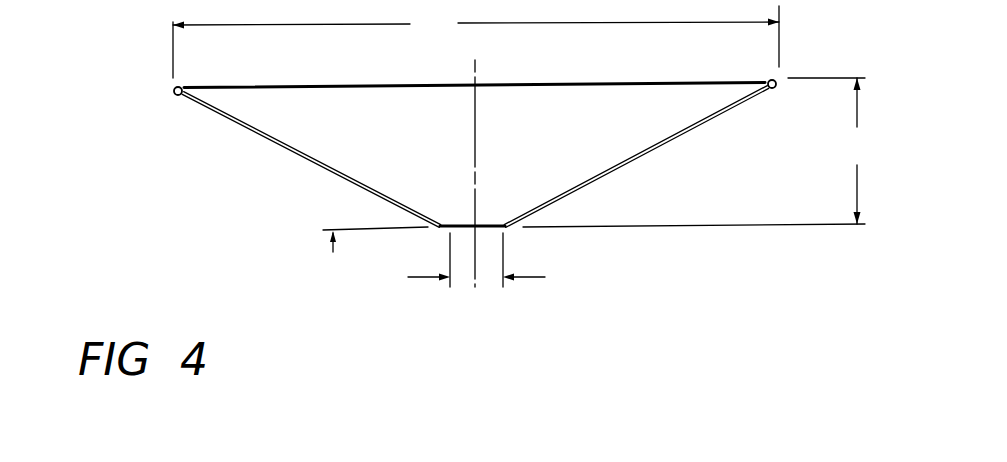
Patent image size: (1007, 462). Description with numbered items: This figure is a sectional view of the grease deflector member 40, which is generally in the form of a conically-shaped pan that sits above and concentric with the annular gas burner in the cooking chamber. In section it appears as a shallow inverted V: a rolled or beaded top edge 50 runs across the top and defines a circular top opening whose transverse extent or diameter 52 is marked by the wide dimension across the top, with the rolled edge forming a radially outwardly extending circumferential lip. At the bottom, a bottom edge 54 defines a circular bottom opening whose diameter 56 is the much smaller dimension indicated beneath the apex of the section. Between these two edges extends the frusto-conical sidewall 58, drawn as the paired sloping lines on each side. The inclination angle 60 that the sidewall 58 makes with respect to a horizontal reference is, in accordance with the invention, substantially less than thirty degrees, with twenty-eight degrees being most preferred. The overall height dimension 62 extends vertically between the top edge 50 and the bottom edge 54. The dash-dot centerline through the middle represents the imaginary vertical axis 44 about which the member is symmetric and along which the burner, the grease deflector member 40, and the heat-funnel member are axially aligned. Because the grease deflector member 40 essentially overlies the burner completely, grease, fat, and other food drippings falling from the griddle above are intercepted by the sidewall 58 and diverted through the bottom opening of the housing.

The grease deflector member 40 is at (413, 193).
The imaginary vertical axis 44 is at (473, 102).
The top edge 50 is at (172, 89).
The diameter 52 is at (476, 40).
The bottom edge 54 is at (468, 233).
The diameter 56 is at (499, 265).
The frusto-conical sidewall 58 is at (300, 146).
The inclination angle 60 is at (360, 168).
The height dimension 62 is at (831, 151).